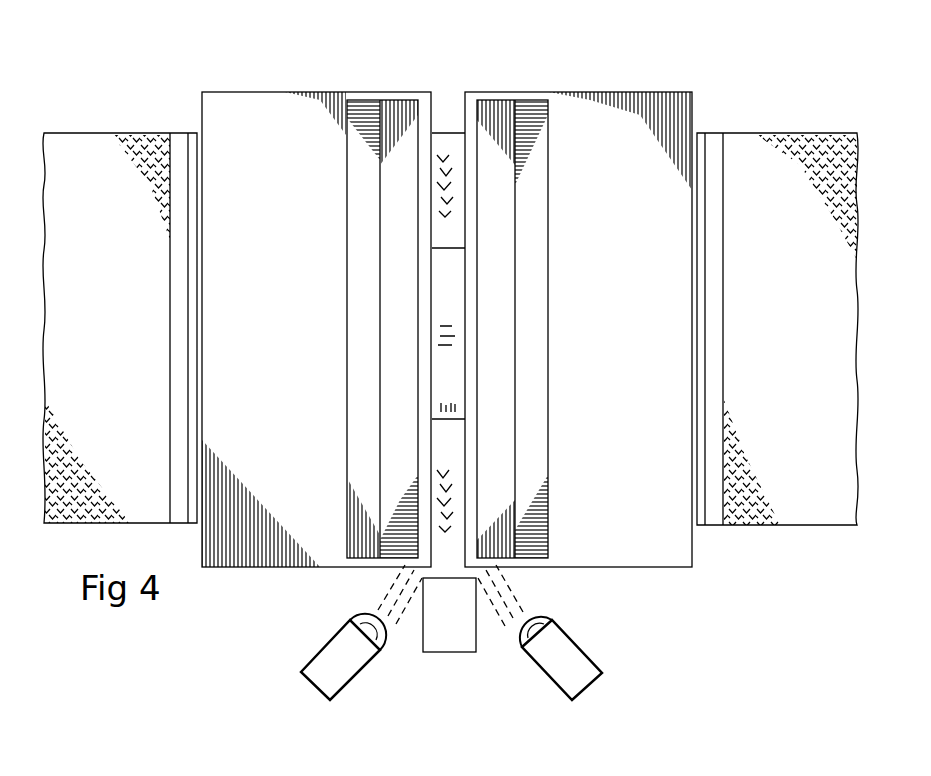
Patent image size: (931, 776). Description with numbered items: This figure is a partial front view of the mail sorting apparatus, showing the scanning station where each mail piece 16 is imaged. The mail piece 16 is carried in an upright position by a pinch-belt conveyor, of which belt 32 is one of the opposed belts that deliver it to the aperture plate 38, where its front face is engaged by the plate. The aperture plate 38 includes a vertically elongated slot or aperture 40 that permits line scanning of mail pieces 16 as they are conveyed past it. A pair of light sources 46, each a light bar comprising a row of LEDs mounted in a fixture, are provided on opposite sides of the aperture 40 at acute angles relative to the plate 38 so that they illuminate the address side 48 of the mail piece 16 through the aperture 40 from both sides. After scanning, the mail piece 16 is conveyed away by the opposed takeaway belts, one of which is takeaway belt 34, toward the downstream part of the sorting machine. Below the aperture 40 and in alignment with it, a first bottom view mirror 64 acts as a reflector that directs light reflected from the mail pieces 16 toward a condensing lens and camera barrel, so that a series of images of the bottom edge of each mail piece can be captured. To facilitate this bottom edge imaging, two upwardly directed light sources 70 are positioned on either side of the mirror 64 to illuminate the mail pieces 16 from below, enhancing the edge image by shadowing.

The mail piece 16 is at (450, 245).
The belt 32 is at (780, 165).
The takeaway belt 34 is at (93, 150).
The aperture plate 38 is at (287, 100).
The aperture 40 is at (445, 86).
The light source 46 is at (388, 112).
The address side 48 is at (443, 288).
The first bottom view mirror 64 is at (447, 660).
The light source 70 is at (325, 655).